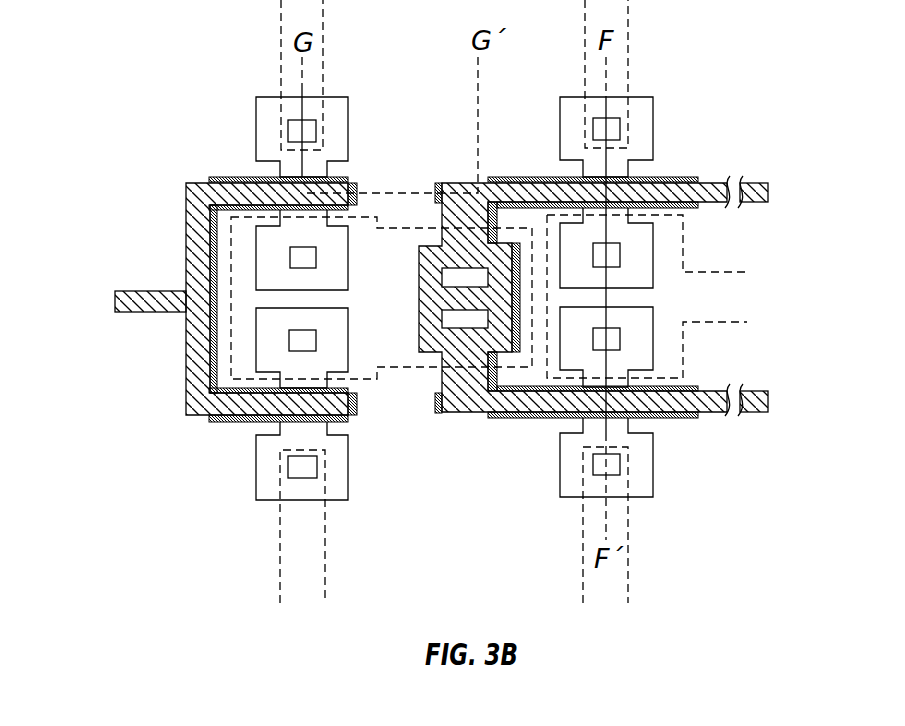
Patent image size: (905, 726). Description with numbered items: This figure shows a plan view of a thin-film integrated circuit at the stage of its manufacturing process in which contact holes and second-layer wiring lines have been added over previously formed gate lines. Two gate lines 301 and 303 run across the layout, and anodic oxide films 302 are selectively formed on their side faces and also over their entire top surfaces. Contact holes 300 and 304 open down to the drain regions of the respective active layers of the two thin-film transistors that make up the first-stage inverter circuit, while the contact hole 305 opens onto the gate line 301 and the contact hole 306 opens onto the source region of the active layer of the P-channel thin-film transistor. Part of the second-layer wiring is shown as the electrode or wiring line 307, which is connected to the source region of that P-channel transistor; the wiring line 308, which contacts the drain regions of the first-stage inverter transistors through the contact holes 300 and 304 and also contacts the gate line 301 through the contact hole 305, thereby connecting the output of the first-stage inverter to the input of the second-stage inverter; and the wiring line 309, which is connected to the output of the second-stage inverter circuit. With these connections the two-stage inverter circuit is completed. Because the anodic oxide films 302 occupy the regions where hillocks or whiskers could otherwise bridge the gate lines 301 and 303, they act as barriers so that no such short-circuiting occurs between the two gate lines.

The contact hole 300 is at (316, 253).
The gate line 301 is at (465, 407).
The anodic oxide film 302 is at (238, 177).
The gate line 303 is at (186, 235).
The contact hole 304 is at (316, 340).
The contact hole 305 is at (472, 323).
The contact hole 306 is at (613, 465).
The electrode (wiring line) 307 is at (618, 508).
The wiring line 308 is at (231, 365).
The wiring line 309 is at (677, 335).